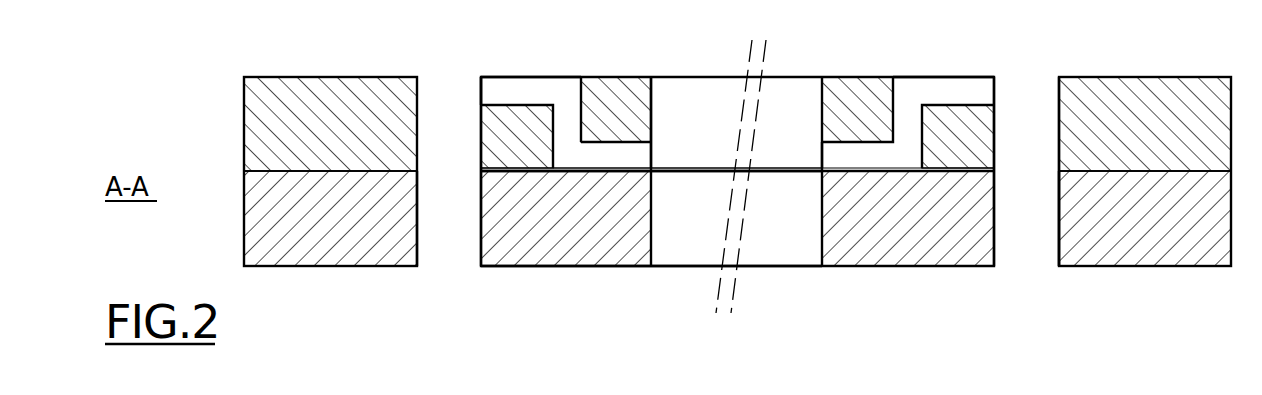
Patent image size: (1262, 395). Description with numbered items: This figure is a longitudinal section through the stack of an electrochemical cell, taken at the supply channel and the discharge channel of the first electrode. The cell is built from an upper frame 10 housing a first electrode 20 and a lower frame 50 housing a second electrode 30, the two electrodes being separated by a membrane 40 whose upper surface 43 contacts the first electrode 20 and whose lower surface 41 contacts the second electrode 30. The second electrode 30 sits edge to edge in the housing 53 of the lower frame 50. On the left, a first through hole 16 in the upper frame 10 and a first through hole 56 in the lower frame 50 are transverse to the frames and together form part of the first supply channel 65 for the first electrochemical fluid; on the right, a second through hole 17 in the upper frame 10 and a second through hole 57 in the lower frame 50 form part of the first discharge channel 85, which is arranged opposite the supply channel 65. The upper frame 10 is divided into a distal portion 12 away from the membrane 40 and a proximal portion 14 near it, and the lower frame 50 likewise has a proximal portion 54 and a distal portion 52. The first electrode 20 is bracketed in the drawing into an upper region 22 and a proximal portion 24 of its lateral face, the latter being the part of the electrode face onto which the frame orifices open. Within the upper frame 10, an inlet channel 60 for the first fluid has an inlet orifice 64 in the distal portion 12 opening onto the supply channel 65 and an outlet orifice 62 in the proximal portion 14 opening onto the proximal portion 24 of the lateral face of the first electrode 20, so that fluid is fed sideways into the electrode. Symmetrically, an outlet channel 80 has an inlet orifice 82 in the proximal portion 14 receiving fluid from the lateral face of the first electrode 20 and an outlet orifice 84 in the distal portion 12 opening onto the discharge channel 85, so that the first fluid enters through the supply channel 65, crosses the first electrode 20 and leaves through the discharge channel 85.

The upper frame 10 is at (263, 118).
The lower frame 50 is at (270, 238).
The first through hole 16 is at (433, 84).
The first supply channel 65 is at (425, 106).
The inlet orifice 64 is at (483, 87).
The distal portion 12 is at (470, 77).
The proximal portion 14 is at (470, 105).
The proximal portion 54 is at (470, 171).
The distal portion 52 is at (470, 221).
The upper channel portion 22 is at (664, 77).
The proximal portion of the lateral face 24 is at (664, 122).
The outlet orifice 62 is at (650, 230).
The inlet channel 60 is at (568, 155).
The second electrode 30 is at (695, 238).
The membrane 40 is at (773, 173).
The lower surface 41 is at (804, 174).
The housing 53 is at (748, 272).
The upper surface 43 is at (705, 167).
The first electrode 20 is at (773, 0).
The inlet orifice 82 is at (828, 153).
The outlet channel 80 is at (940, 90).
The outlet orifice 84 is at (981, 95).
The first discharge channel 85 is at (1027, 102).
The second through hole 17 is at (1042, 96).
The first through hole 56 is at (425, 238).
The second through hole 57 is at (1043, 240).